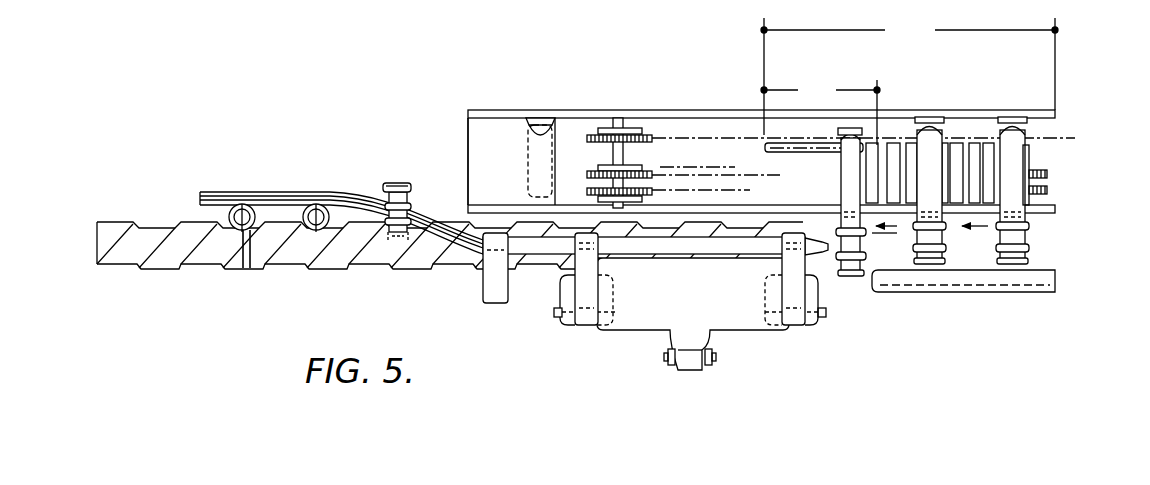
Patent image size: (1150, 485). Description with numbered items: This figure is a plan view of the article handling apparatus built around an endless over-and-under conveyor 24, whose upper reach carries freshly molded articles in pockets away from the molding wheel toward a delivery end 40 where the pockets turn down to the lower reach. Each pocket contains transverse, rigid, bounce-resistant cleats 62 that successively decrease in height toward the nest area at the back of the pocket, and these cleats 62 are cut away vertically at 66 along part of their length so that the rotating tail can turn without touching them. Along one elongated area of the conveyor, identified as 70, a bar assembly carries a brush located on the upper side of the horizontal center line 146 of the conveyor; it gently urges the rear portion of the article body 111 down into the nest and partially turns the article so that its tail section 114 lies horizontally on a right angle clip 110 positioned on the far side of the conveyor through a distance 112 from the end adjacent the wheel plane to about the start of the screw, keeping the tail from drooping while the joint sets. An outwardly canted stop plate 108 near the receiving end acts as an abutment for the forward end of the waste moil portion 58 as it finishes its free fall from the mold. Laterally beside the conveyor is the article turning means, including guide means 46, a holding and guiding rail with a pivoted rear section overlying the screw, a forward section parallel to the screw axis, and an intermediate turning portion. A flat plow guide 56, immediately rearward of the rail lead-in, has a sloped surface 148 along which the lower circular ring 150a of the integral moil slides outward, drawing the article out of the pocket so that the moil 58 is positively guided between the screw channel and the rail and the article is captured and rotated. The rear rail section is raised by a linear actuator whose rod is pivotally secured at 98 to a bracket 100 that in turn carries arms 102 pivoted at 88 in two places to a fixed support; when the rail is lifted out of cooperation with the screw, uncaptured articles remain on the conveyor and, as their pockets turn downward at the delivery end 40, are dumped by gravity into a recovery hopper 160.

The conveyor 24 is at (660, 108).
The delivery end 40 is at (547, 140).
The guide means 46 is at (444, 210).
The plow guide 56 is at (845, 222).
The waste moil portion 58 is at (888, 235).
The cleats 62 is at (908, 110).
The cut away portion 66 is at (990, 110).
The portion of conveyor length 70 is at (820, 112).
The pivots 88 is at (556, 318).
The pivotal securement 98 is at (666, 358).
The bracket 100 is at (737, 312).
The arms 102 is at (570, 294).
The stop plate 108 is at (1046, 276).
The right angle clip 110 is at (1040, 122).
The article body 111 is at (958, 110).
The distance 112 is at (909, 76).
The tail section 114 is at (934, 110).
The horizontal center line 146 is at (728, 140).
The sloped surface 148 is at (866, 222).
The lower circular ring 150a is at (850, 236).
The hopper 160 is at (482, 128).